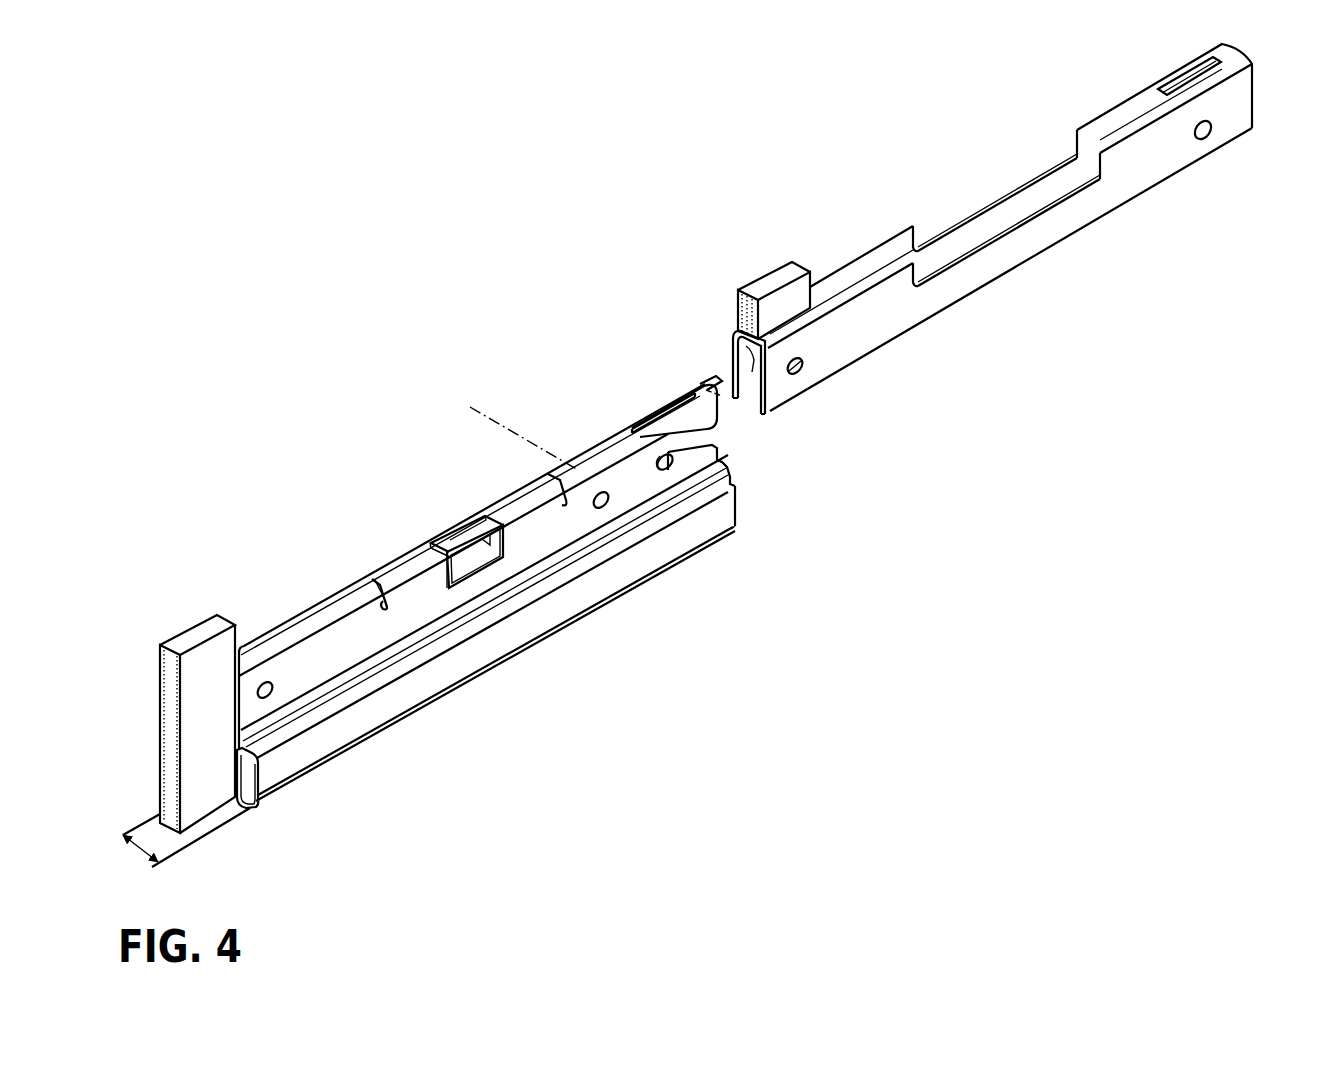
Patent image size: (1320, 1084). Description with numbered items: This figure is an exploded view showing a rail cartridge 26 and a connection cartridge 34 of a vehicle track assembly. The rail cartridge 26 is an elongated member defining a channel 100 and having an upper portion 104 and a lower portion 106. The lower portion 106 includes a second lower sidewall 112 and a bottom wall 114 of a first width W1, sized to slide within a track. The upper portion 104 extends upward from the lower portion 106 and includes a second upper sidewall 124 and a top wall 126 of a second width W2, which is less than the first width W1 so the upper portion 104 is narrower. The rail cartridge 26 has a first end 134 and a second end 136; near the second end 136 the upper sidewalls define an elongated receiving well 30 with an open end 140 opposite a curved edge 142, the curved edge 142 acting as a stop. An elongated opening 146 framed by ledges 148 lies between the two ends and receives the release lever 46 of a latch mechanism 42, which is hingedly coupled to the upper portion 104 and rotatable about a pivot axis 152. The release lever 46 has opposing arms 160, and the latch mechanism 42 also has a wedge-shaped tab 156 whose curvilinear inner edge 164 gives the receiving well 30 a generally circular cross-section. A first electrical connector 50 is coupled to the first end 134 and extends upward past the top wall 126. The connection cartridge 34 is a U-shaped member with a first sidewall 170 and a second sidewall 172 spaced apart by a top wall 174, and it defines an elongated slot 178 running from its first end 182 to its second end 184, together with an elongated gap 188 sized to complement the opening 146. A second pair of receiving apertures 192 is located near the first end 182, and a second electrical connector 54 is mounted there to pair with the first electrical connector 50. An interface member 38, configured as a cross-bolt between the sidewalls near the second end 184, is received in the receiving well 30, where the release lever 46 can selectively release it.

The rail cartridge 26 is at (385, 432).
The receiving well 30 is at (688, 432).
The connection cartridge 34 is at (925, 178).
The interface member 38 is at (1207, 135).
The latch mechanism 42 is at (535, 585).
The release lever 46 is at (422, 543).
The first electrical connector 50 is at (188, 642).
The second electrical connector 54 is at (770, 278).
The channel 100 is at (254, 806).
The upper portion 104 is at (300, 663).
The lower portion 106 is at (390, 700).
The second lower sidewall 112 is at (353, 750).
The bottom wall 114 is at (246, 800).
The second upper sidewall 124 is at (545, 533).
The top wall 126 is at (320, 598).
The first end 134 is at (258, 778).
The second end 136 is at (263, 677).
The open end 140 is at (718, 440).
The curved edge 142 is at (640, 440).
The opening 146 is at (462, 493).
The ledges 148 is at (397, 575).
The pivot axis 152 is at (513, 438).
The tab 156 is at (735, 500).
The opposing arms 160 is at (450, 527).
The inner edge 164 is at (674, 470).
The first sidewall 170 is at (742, 333).
The second sidewall 172 is at (890, 300).
The top wall 174 is at (850, 272).
The elongated slot 178 is at (736, 352).
The first end 182 is at (768, 412).
The second end 184 is at (1253, 83).
The elongated gap 188 is at (1016, 180).
The second pair of receiving apertures 192 is at (803, 370).
The first width W1 is at (140, 846).
The second width W2 is at (727, 365).